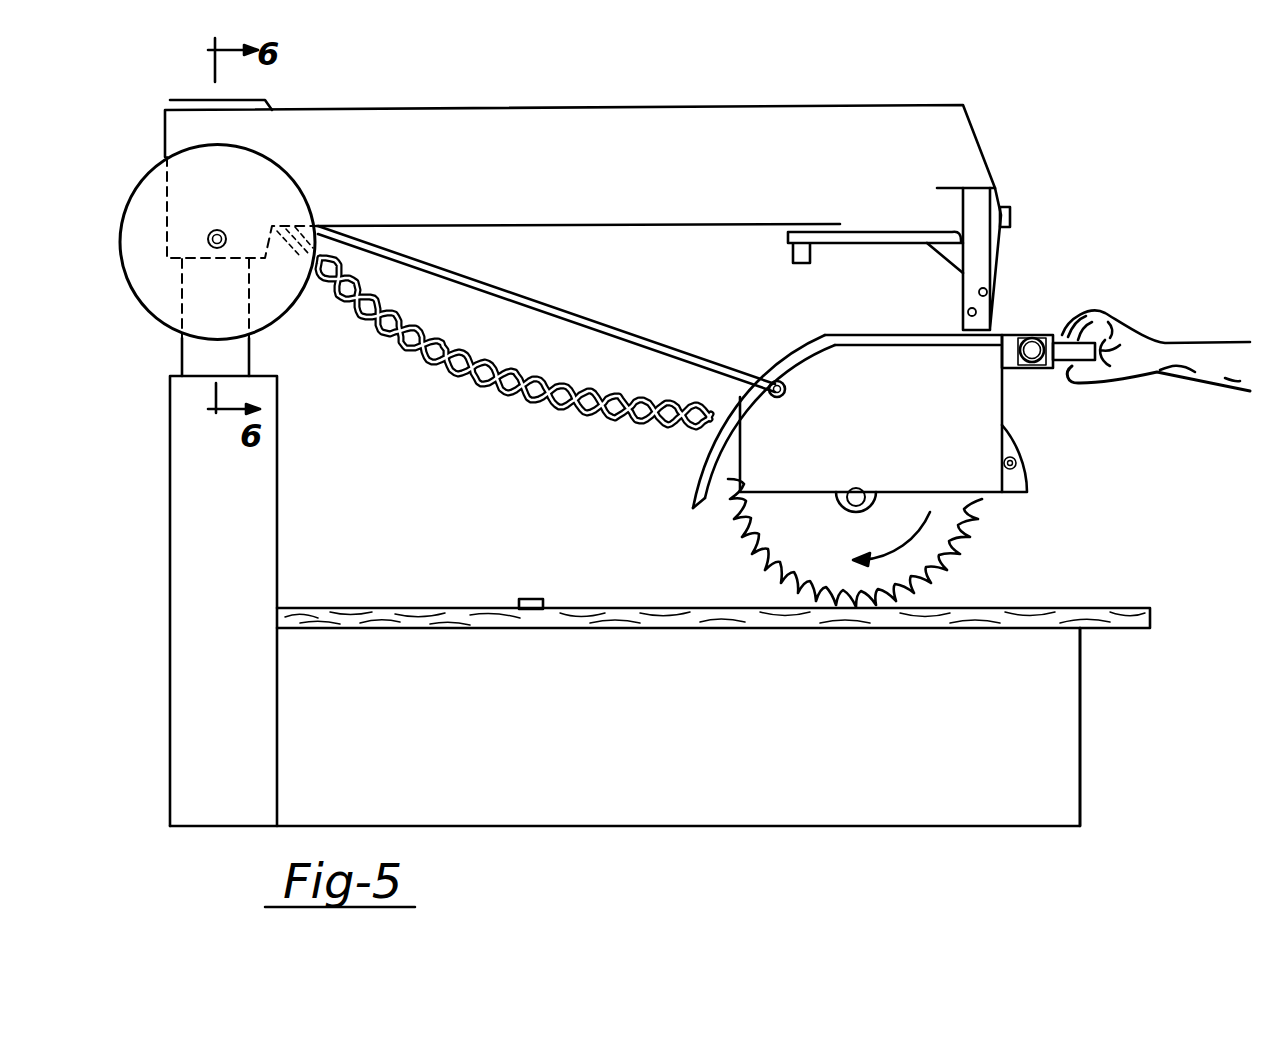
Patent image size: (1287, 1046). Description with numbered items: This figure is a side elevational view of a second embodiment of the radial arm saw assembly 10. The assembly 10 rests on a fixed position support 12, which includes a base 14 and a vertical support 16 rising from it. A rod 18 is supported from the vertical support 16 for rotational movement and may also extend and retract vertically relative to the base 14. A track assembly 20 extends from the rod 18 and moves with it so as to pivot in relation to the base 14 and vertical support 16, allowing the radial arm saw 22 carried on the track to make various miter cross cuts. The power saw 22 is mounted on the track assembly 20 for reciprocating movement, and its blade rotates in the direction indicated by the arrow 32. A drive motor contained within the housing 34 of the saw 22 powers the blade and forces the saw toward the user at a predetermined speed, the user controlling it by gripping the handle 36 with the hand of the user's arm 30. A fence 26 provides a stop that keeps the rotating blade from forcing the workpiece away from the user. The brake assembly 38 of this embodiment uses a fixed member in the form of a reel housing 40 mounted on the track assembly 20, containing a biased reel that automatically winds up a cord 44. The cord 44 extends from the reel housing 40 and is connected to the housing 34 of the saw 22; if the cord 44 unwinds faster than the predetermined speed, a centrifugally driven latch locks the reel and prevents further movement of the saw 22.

The radial arm saw assembly 10 is at (1040, 249).
The fixed position support 12 is at (1080, 737).
The base 14 is at (1050, 762).
The vertical support 16 is at (258, 527).
The rod 18 is at (249, 352).
The track assembly 20 is at (505, 117).
The radial arm saw 22 is at (990, 406).
The fence 26 is at (533, 599).
The user's arm 30 is at (1193, 368).
The arrow 32 is at (893, 553).
The housing 34 is at (975, 463).
The handle 36 is at (1062, 342).
The brake assembly 38 is at (313, 210).
The reel housing 40 is at (297, 180).
The cord 44 is at (626, 334).